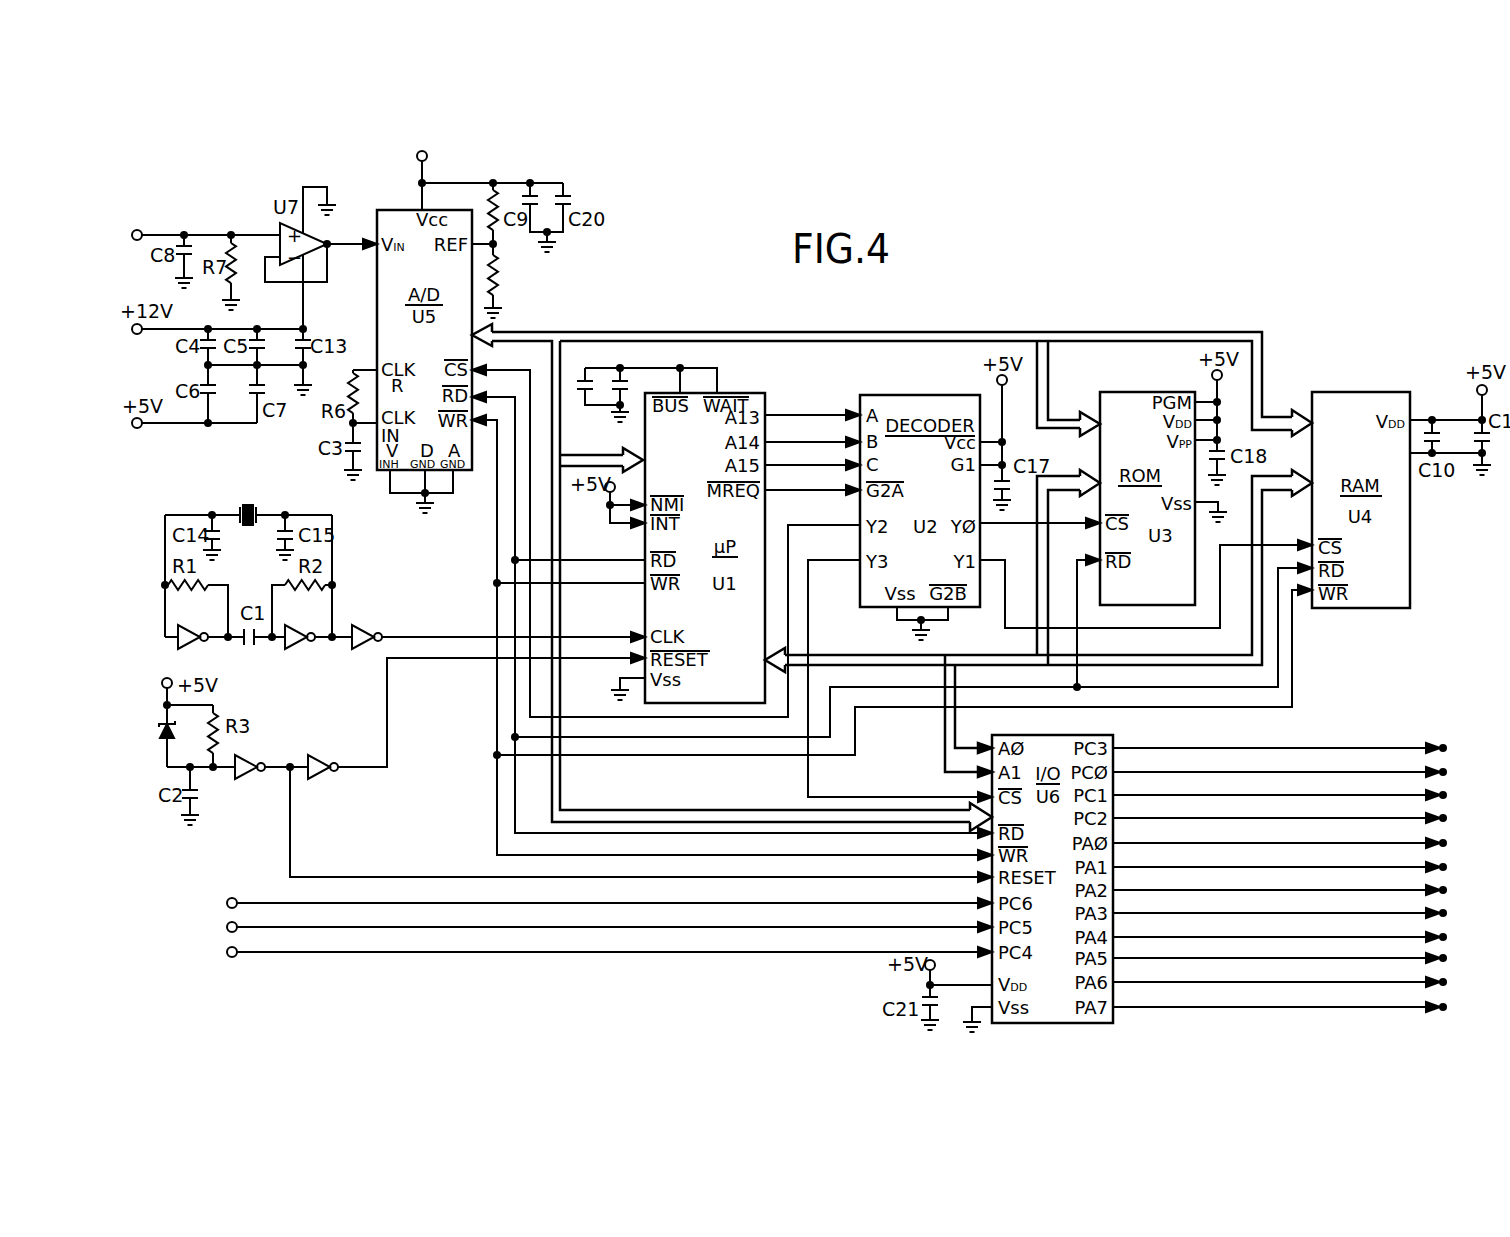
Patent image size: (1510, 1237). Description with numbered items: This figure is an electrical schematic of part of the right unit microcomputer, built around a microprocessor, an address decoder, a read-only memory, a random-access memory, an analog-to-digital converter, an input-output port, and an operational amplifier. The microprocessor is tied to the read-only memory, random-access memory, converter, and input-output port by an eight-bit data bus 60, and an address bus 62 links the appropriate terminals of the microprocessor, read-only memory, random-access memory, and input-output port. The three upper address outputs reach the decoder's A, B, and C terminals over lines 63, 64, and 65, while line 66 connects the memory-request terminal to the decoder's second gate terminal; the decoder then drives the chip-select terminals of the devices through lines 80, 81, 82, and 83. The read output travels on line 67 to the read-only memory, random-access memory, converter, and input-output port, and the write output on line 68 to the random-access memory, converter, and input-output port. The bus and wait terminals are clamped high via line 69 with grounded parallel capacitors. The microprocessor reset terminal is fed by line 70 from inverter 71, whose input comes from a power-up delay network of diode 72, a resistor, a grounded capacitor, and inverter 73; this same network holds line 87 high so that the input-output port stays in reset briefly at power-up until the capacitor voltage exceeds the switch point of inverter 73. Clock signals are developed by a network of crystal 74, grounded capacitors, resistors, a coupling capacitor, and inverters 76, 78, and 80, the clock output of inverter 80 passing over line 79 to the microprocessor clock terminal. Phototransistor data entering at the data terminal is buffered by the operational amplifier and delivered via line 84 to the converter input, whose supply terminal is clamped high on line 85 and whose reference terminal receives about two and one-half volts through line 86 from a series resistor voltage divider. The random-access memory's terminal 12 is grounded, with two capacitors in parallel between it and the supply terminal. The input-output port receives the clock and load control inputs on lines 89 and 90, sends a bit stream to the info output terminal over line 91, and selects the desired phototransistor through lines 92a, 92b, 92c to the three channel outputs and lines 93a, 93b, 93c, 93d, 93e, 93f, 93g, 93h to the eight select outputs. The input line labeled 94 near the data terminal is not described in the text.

The terminal 12 is at (1436, 459).
The 8-bit data bus 60 is at (688, 330).
The address bus 62 is at (977, 655).
The line 63 is at (825, 413).
The line 64 is at (820, 441).
The line 65 is at (820, 464).
The line 66 is at (820, 489).
The line 67 is at (515, 696).
The line 68 is at (497, 810).
The line 69 is at (705, 368).
The line 70 is at (440, 660).
The inverter 71 is at (318, 780).
The diode 72 is at (158, 732).
The inverter 73 is at (246, 780).
The crystal 74 is at (247, 505).
The inverter 76 is at (192, 646).
The inverter 78 is at (298, 648).
The line 79 is at (447, 637).
The inverter 80 is at (365, 625).
The line 81 is at (988, 560).
The line 82 is at (828, 524).
The line 83 is at (843, 560).
The line 84 is at (350, 242).
The line 85 is at (447, 183).
The line 86 is at (472, 248).
The line 87 is at (292, 845).
The line 89 is at (548, 927).
The line 90 is at (575, 952).
The line 91 is at (1193, 748).
The line 92a is at (1193, 772).
The line 92b is at (1193, 795).
The line 92c is at (1193, 818).
The line 93a is at (1193, 843).
The line 93b is at (1193, 867).
The line 93c is at (1193, 890).
The line 93d is at (1193, 913).
The line 93e is at (1193, 937).
The line 93f is at (1193, 958).
The line 93g is at (1193, 982).
The line 93h is at (1193, 1007).
The data input line 94 is at (210, 233).